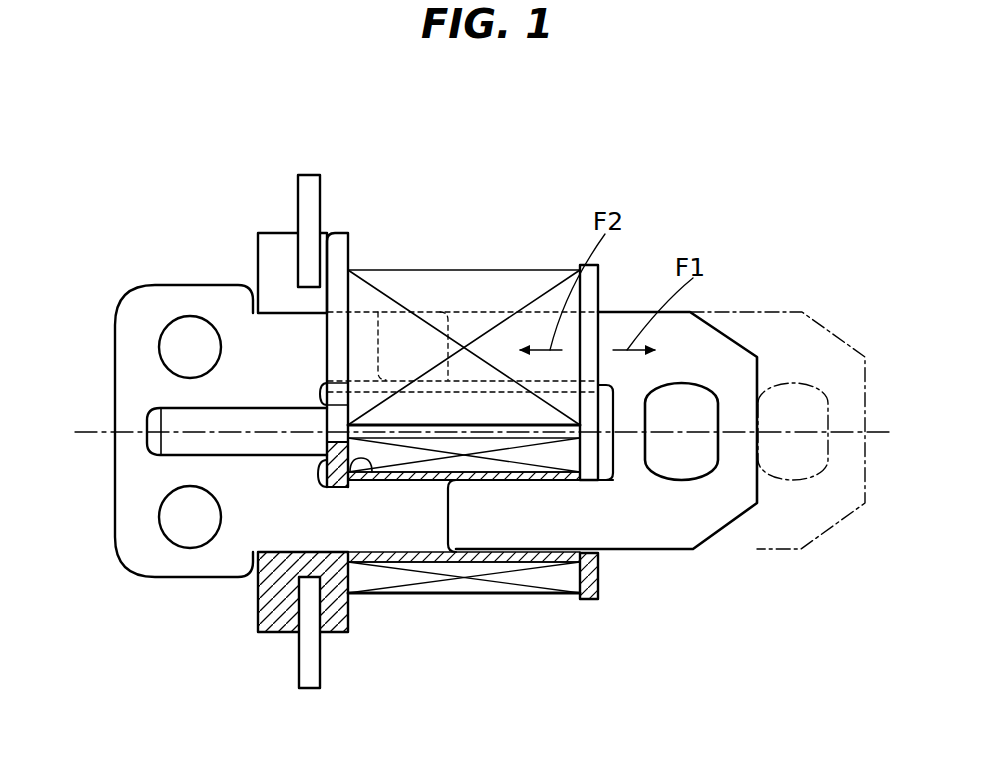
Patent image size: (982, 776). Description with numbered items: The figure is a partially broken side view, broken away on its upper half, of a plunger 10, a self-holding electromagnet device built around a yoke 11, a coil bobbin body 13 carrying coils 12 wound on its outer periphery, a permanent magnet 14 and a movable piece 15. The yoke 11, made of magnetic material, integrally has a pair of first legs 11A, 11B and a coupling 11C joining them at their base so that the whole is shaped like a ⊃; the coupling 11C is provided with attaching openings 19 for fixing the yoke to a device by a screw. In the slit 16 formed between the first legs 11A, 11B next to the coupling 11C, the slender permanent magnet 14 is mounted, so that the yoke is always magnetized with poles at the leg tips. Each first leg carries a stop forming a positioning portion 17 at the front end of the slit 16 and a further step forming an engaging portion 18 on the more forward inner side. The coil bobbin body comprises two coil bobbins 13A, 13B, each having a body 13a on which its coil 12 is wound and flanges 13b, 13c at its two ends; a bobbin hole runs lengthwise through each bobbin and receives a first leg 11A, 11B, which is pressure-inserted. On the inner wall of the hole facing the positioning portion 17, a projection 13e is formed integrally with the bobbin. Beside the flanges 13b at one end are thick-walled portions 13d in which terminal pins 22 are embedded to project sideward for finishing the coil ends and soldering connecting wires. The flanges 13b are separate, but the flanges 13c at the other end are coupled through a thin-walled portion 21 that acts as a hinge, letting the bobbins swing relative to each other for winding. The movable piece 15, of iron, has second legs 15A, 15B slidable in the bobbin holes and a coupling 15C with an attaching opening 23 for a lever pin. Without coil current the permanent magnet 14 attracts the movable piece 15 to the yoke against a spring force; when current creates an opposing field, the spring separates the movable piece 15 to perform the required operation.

The plunger 10 is at (300, 155).
The yoke 11 is at (311, 429).
The first leg 11A is at (407, 327).
The first leg 11B is at (400, 537).
The coupling 11C is at (128, 478).
The coil 12 is at (493, 288).
The coil bobbin body 13 is at (434, 428).
The coil bobbin 13A is at (548, 266).
The coil bobbin 13B is at (560, 600).
The body 13a is at (467, 380).
The flange 13b is at (337, 240).
The flange 13c is at (593, 280).
The thick-walled portion 13d is at (267, 248).
The projection 13e is at (323, 465).
The permanent magnet 14 is at (172, 415).
The movable piece 15 is at (660, 415).
The second leg 15A is at (500, 313).
The second leg 15B is at (515, 535).
The coupling 15C is at (735, 470).
The slit 16 is at (217, 450).
The positioning portion 17 is at (333, 390).
The engaging portion 18 is at (403, 323).
The mounting hole 19 is at (168, 336).
The thin-walled portion 21 is at (595, 448).
The terminal pin 22 is at (305, 192).
The attaching opening 23 is at (678, 397).